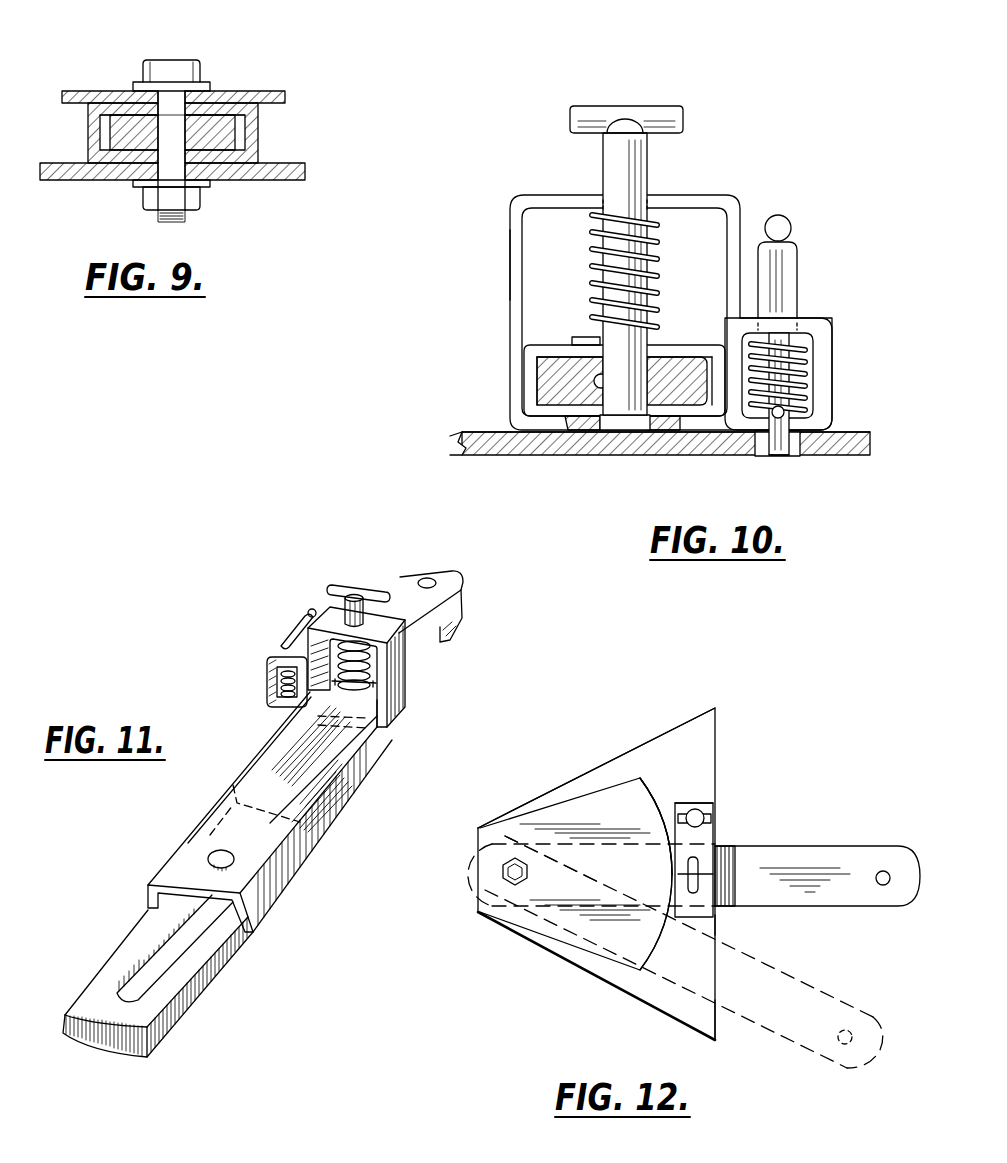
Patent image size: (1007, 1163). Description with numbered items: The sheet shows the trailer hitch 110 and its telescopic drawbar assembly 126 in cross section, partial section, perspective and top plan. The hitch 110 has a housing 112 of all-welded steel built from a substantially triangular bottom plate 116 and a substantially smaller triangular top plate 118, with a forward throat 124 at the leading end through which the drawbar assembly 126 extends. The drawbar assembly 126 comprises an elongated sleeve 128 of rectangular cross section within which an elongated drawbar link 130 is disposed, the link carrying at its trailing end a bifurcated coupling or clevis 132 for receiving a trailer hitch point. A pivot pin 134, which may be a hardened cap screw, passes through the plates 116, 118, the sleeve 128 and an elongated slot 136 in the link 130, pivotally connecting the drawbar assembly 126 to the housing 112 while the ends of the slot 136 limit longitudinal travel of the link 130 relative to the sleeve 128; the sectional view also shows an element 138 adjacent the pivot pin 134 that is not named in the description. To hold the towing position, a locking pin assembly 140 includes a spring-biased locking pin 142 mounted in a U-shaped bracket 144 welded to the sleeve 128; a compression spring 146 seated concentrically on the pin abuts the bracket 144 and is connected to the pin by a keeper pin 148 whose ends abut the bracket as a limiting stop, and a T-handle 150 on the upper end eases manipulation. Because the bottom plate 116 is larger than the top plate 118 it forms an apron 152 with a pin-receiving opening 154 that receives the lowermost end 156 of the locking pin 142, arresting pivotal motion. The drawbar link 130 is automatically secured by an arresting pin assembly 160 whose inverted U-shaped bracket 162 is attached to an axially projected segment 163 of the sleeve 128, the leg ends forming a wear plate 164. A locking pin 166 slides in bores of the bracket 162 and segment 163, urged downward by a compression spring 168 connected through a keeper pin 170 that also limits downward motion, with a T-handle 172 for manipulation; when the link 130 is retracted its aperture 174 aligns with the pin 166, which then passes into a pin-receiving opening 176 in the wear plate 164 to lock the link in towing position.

In FIG. 12, the trailer hitch 110 is at (721, 730).
In FIG. 12, the housing 112 is at (596, 788).
In FIG. 9, the bottom plate 116 is at (255, 174).
In FIG. 10, the bottom plate 116 is at (458, 440).
In FIG. 12, the bottom plate 116 is at (705, 1020).
In FIG. 9, the top plate 118 is at (256, 92).
In FIG. 12, the top plate 118 is at (650, 870).
In FIG. 12, the forward throat 124 is at (653, 933).
In FIG. 9, the telescopic drawbar assembly 126 is at (262, 136).
In FIG. 10, the telescopic drawbar assembly 126 is at (541, 342).
In FIG. 11, the telescopic drawbar assembly 126 is at (253, 776).
In FIG. 9, the elongated sleeve 128 is at (94, 130).
In FIG. 11, the elongated sleeve 128 is at (290, 848).
In FIG. 9, the drawbar link 130 is at (213, 118).
In FIG. 10, the drawbar link 130 is at (547, 370).
In FIG. 11, the drawbar link 130 is at (122, 960).
In FIG. 12, the drawbar link 130 is at (850, 855).
In FIG. 11, the bifurcated coupling or clevis 132 is at (467, 612).
In FIG. 12, the bifurcated coupling or clevis 132 is at (916, 862).
In FIG. 9, the pivot pin 134 is at (172, 64).
In FIG. 12, the pivot pin 134 is at (505, 868).
In FIG. 9, the elongated slot 136 is at (157, 196).
In FIG. 9, the washer 138 is at (165, 100).
In FIG. 10, the locking pin assembly 140 is at (831, 322).
In FIG. 11, the locking pin assembly 140 is at (268, 668).
In FIG. 12, the locking pin assembly 140 is at (698, 800).
In FIG. 10, the spring-biased locking pin 142 is at (788, 272).
In FIG. 11, the spring-biased locking pin 142 is at (284, 652).
In FIG. 12, the spring-biased locking pin 142 is at (700, 812).
In FIG. 10, the bracket 144 is at (822, 352).
In FIG. 12, the bracket 144 is at (688, 803).
In FIG. 10, the compression spring 146 is at (806, 384).
In FIG. 11, the compression spring 146 is at (288, 684).
In FIG. 10, the keeper pin 148 is at (790, 418).
In FIG. 10, the T-handle 150 is at (784, 224).
In FIG. 11, the T-handle 150 is at (306, 625).
In FIG. 12, the T-handle 150 is at (706, 818).
In FIG. 10, the apron 152 is at (470, 430).
In FIG. 12, the apron 152 is at (706, 937).
In FIG. 10, the pin-receiving opening 154 is at (768, 446).
In FIG. 10, the lowermost end of locking pin 156 is at (782, 452).
In FIG. 10, the arresting pin assembly 160 is at (524, 193).
In FIG. 11, the arresting pin assembly 160 is at (346, 612).
In FIG. 12, the arresting pin assembly 160 is at (724, 898).
In FIG. 10, the bracket 162 is at (516, 253).
In FIG. 12, the bracket 162 is at (680, 893).
In FIG. 10, the axially projected segment of sleeve 163 is at (553, 343).
In FIG. 11, the axially projected segment of sleeve 163 is at (328, 745).
In FIG. 10, the wear plate 164 is at (556, 432).
In FIG. 11, the wear plate 164 is at (382, 724).
In FIG. 10, the locking pin 166 is at (640, 165).
In FIG. 11, the locking pin 166 is at (378, 638).
In FIG. 12, the locking pin 166 is at (700, 872).
In FIG. 10, the compression spring 168 is at (652, 262).
In FIG. 11, the compression spring 168 is at (372, 668).
In FIG. 10, the keeper pin 170 is at (660, 340).
In FIG. 11, the keeper pin 170 is at (372, 693).
In FIG. 10, the T-handle 172 is at (648, 118).
In FIG. 12, the T-handle 172 is at (662, 845).
In FIG. 10, the aperture 174 is at (596, 384).
In FIG. 10, the pin-receiving opening 176 is at (611, 433).